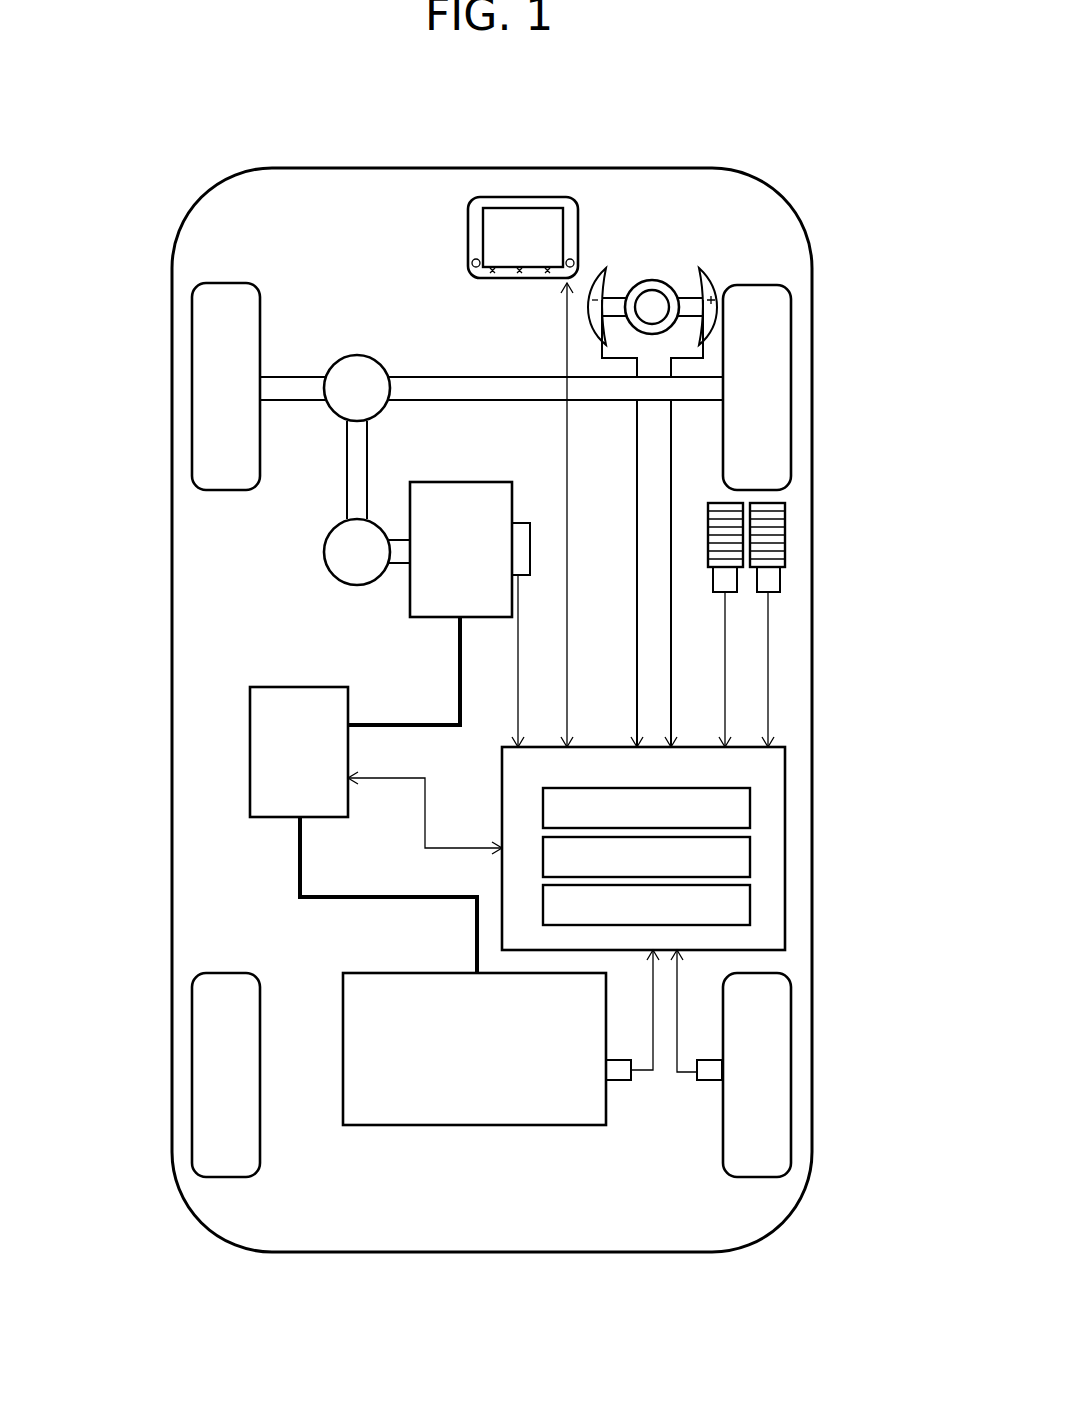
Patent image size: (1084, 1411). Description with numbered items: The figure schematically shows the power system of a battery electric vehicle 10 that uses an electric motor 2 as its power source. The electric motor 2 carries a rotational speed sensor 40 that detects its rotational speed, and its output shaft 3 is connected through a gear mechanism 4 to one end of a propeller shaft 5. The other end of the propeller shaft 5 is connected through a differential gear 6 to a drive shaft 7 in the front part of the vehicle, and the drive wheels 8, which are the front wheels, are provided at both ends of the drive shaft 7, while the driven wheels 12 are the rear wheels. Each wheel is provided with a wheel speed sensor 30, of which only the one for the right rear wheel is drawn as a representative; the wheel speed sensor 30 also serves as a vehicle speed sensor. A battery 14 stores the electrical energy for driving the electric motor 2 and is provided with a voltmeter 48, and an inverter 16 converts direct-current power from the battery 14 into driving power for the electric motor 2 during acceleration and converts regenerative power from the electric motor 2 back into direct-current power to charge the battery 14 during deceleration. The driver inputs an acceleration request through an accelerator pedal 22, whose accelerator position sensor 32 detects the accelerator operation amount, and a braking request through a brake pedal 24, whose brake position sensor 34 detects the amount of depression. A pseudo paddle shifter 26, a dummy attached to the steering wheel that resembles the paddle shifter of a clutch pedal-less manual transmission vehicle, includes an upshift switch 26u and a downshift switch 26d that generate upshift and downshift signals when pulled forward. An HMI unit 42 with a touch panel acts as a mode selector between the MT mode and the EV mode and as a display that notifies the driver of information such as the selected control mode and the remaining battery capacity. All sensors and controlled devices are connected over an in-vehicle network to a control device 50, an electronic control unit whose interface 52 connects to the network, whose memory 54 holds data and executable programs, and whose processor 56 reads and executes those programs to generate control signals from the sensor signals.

The battery electric vehicle 10 is at (812, 186).
The drive wheels 8 is at (192, 338).
The driven wheels 12 is at (192, 1046).
The drive shaft 7 is at (418, 377).
The differential gear 6 is at (357, 355).
The propeller shaft 5 is at (345, 504).
The gear mechanism 4 is at (326, 541).
The output shaft 3 is at (398, 574).
The electric motor 2 is at (430, 617).
The rotational speed sensor 40 is at (527, 523).
The HMI unit 42 is at (528, 197).
The pseudo paddle shifter 26 is at (660, 282).
The downshift switch 26d is at (603, 272).
The upshift switch 26u is at (708, 272).
The brake pedal 24 is at (730, 503).
The accelerator pedal 22 is at (785, 522).
The accelerator position sensor 32 is at (780, 580).
The brake position sensor 34 is at (733, 594).
The inverter 16 is at (250, 748).
The control device 50 is at (709, 848).
The interface 52 is at (750, 808).
The memory 54 is at (750, 856).
The processor 56 is at (750, 898).
The battery 14 is at (492, 1128).
The voltmeter 48 is at (622, 1082).
The wheel speed sensor 30 is at (707, 1082).